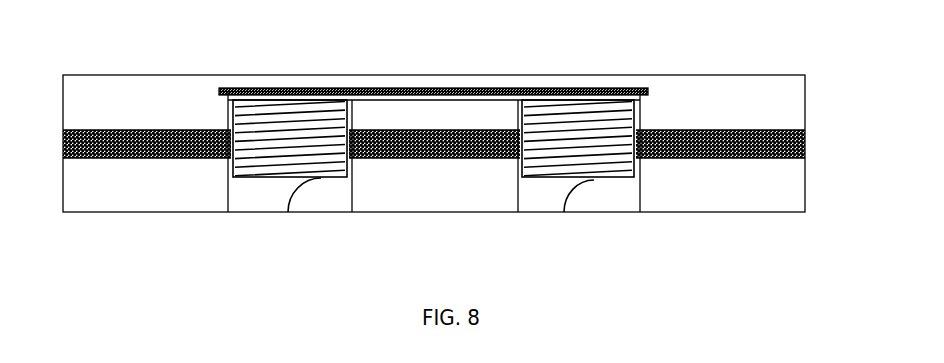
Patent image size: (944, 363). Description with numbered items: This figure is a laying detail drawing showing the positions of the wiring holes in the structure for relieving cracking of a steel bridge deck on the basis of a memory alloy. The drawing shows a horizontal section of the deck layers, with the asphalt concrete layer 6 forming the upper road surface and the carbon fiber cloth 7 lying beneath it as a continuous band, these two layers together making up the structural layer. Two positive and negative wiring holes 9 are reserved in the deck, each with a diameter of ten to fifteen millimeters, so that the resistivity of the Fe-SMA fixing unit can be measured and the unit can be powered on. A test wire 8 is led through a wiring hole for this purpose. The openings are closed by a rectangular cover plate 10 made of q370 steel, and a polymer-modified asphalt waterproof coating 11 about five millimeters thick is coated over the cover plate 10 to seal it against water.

The asphalt concrete layer 6 is at (713, 193).
The carbon fiber cloth 7 is at (796, 160).
The test wire 8 is at (609, 200).
The positive and negative wiring hole 9 is at (372, 225).
The cover plate 10 is at (514, 80).
The waterproof coating 11 is at (417, 75).